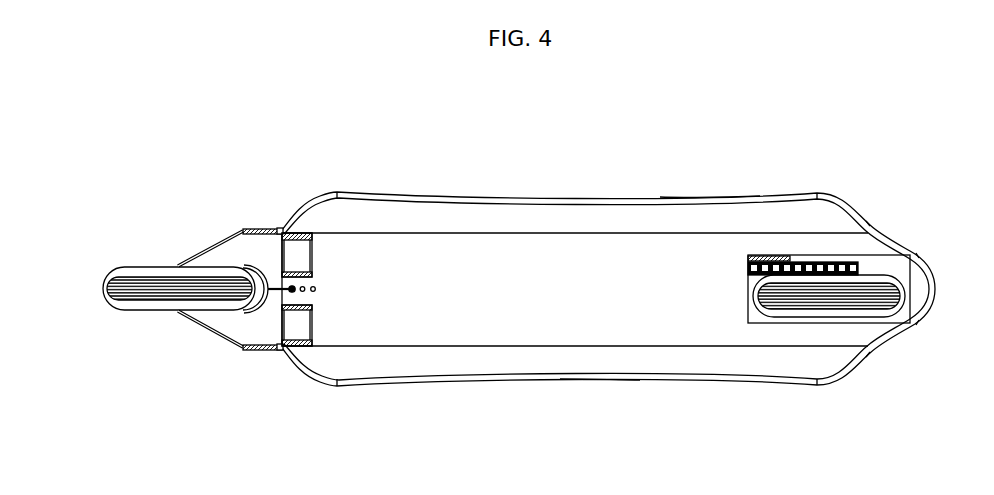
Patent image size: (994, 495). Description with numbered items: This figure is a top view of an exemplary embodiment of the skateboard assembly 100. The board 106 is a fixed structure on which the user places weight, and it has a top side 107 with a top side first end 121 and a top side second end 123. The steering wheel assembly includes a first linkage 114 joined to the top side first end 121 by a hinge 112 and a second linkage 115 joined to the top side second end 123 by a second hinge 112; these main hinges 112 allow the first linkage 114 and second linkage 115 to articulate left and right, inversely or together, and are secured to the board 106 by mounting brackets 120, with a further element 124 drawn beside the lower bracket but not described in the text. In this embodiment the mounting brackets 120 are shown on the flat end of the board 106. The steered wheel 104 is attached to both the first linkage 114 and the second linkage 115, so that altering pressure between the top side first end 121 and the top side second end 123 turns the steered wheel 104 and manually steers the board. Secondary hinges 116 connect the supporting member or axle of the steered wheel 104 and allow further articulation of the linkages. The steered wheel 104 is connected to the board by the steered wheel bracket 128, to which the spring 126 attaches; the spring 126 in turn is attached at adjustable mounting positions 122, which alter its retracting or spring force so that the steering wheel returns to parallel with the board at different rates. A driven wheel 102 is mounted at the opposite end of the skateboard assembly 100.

The skateboard assembly 100 is at (336, 123).
The driven wheel 102 is at (864, 266).
The steered wheel 104 is at (96, 296).
The board 106 is at (596, 192).
The top side 107 is at (552, 237).
The main hinge 112 is at (279, 227).
The first linkage 114 is at (223, 238).
The second linkage 115 is at (248, 355).
The secondary hinges 116 is at (167, 260).
The mounting bracket 120 is at (316, 258).
The top side first end 121 is at (702, 191).
The adjustable mounting positions 122 is at (319, 289).
The top side second end 123 is at (597, 387).
The lower housing block 124 is at (315, 325).
The spring 126 is at (276, 298).
The steered wheel bracket 128 is at (249, 261).